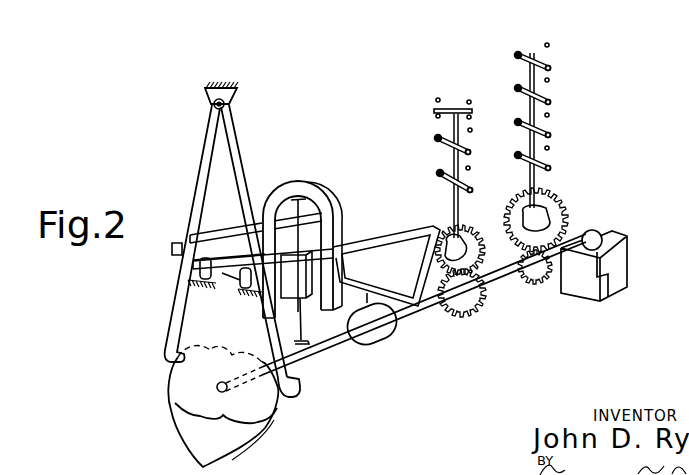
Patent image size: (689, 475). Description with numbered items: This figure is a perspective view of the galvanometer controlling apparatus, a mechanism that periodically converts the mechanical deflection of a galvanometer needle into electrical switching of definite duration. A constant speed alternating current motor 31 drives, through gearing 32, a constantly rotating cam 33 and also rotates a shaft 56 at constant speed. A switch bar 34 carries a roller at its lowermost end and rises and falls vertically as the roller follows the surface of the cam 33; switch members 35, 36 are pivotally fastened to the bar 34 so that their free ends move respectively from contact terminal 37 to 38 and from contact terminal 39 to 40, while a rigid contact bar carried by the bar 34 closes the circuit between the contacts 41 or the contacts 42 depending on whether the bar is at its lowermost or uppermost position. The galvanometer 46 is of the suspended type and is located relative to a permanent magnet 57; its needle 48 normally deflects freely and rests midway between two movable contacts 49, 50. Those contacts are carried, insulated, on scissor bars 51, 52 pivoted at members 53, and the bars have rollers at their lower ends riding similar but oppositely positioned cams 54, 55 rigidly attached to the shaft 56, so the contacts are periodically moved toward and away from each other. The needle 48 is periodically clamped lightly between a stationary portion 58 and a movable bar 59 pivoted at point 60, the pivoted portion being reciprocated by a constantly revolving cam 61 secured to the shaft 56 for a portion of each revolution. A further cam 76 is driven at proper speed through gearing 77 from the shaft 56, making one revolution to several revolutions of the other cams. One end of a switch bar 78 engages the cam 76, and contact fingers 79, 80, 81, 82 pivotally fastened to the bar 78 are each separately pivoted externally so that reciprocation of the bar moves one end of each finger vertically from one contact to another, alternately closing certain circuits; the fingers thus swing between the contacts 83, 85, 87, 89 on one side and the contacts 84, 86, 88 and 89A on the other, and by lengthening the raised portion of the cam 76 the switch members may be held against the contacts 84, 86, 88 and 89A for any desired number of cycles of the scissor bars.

The constant speed alternating current motor 31 is at (627, 261).
The gearing 32 is at (484, 257).
The cam 33 is at (460, 250).
The switch bar 34 is at (460, 206).
The switch member 35 is at (443, 178).
The switch member 36 is at (440, 143).
The contact terminal 37 is at (473, 191).
The contact terminal 38 is at (470, 170).
The contact terminal 39 is at (470, 152).
The contact terminal 40 is at (472, 131).
The contacts 41 is at (436, 116).
The contacts 42 is at (469, 100).
The galvanometer 46 is at (304, 312).
The galvanometer needle 48 is at (222, 273).
The movable contact 49 is at (196, 268).
The movable contact 50 is at (237, 290).
The scissor bar 51 is at (203, 147).
The scissor bar 52 is at (236, 128).
The pivot of scissor members 53 is at (214, 106).
The cam 54 is at (175, 438).
The cam 55 is at (283, 401).
The shaft 56 is at (413, 312).
The permanent magnet 57 is at (336, 186).
The stationary portion 58 is at (215, 280).
The movable bar 59 is at (222, 253).
The pivot 60 is at (433, 226).
The cam 61 is at (384, 341).
The cam 76 is at (536, 220).
The gearing 77 is at (542, 279).
The switch bar 78 is at (536, 182).
The contact finger 79 is at (523, 161).
The contact finger 80 is at (523, 129).
The contact finger 81 is at (523, 96).
The contact finger 82 is at (523, 63).
The pin end 83 is at (551, 168).
The contact 84 is at (550, 149).
The pin end 85 is at (551, 135).
The contact 86 is at (550, 116).
The pin end 87 is at (551, 102).
The contact 88 is at (550, 81).
The pin end 89 is at (551, 68).
The contact 89A is at (550, 46).